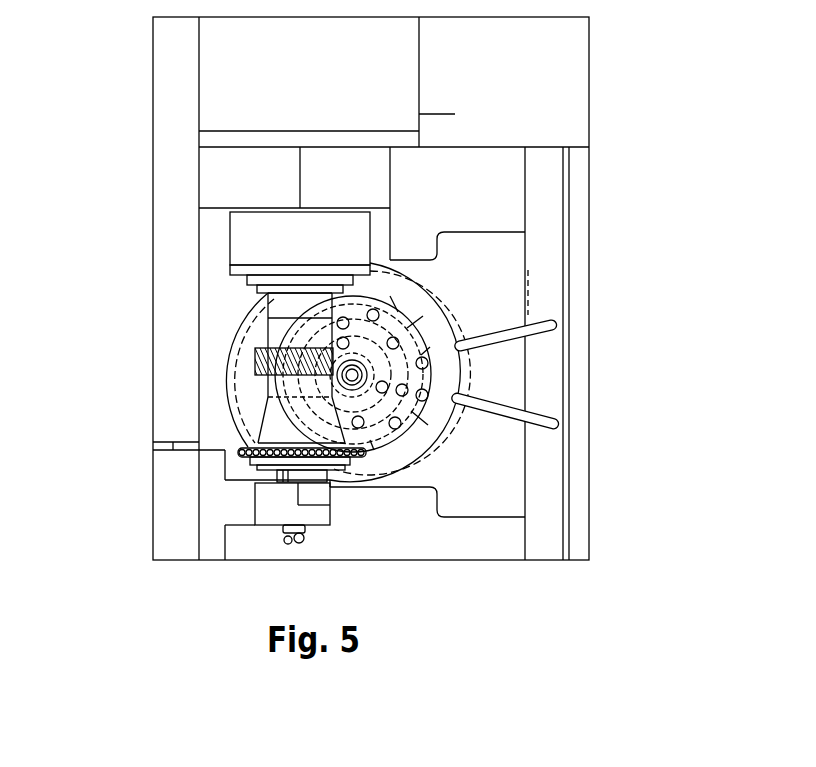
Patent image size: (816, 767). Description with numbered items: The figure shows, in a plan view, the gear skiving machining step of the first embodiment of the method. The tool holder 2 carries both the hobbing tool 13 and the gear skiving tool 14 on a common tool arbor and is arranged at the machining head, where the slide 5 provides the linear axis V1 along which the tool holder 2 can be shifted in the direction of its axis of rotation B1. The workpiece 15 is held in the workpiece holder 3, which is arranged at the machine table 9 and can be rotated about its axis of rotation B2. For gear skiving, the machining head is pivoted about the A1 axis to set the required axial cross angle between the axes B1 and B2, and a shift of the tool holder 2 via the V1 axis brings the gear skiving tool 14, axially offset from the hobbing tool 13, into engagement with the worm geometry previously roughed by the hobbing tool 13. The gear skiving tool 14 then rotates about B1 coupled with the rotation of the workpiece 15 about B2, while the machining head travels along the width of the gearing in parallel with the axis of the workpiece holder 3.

The tool holder 2 is at (300, 378).
The workpiece holder 3 is at (365, 350).
The slide 5 is at (170, 233).
The machine table 9 is at (392, 372).
The hobbing tool 13 is at (245, 452).
The gear skiving tool 14 is at (258, 360).
The workpiece 15 is at (370, 391).